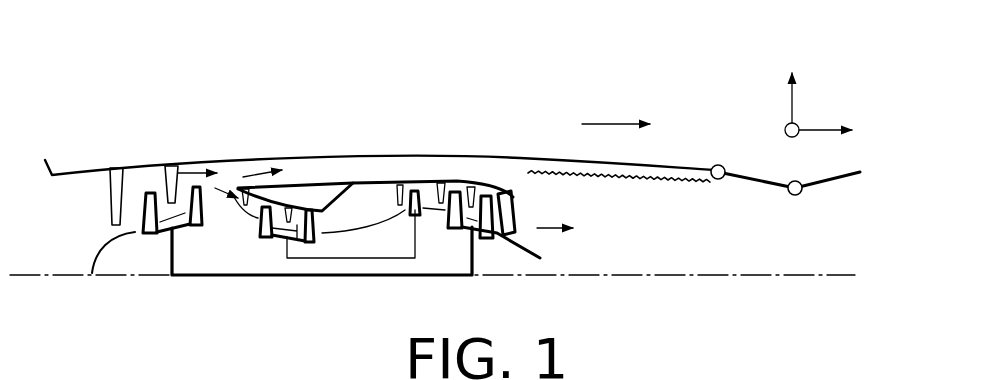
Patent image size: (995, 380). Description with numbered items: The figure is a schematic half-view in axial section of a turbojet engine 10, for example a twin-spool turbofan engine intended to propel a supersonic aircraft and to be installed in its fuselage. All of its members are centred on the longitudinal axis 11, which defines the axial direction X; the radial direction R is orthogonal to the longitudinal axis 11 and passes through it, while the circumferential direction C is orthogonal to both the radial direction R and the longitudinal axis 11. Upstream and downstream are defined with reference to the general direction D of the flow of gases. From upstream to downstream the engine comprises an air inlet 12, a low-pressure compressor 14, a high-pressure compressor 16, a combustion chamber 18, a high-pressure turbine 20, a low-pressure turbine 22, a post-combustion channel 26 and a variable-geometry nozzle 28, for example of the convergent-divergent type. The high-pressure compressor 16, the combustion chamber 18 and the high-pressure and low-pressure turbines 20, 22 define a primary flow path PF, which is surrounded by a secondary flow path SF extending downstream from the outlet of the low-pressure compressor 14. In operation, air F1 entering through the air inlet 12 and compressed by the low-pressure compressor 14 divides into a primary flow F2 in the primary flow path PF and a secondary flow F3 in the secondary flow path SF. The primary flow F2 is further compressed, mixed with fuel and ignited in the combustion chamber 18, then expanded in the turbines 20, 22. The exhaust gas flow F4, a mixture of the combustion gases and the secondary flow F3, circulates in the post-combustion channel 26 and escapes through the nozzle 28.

The turbojet engine 10 is at (221, 133).
The longitudinal axis 11 is at (805, 275).
The air inlet 12 is at (80, 222).
The low-pressure compressor 14 is at (138, 185).
The high-pressure compressor 16 is at (278, 213).
The combustion chamber 18 is at (380, 180).
The high-pressure turbine 20 is at (423, 195).
The low-pressure turbine 22 is at (502, 193).
The post-combustion channel 26 is at (637, 232).
The variable-geometry nozzle 28 is at (753, 180).
The air F1 is at (192, 172).
The primary flow F2 is at (217, 198).
The secondary flow F3 is at (255, 170).
The exhaust gas flow F4 is at (552, 232).
The primary flow path PF is at (297, 245).
The secondary flow path SF is at (338, 170).
The general direction of the flow of gases D is at (613, 122).
The radial direction R is at (787, 86).
The axial direction X is at (834, 129).
The circumferential direction C is at (781, 145).